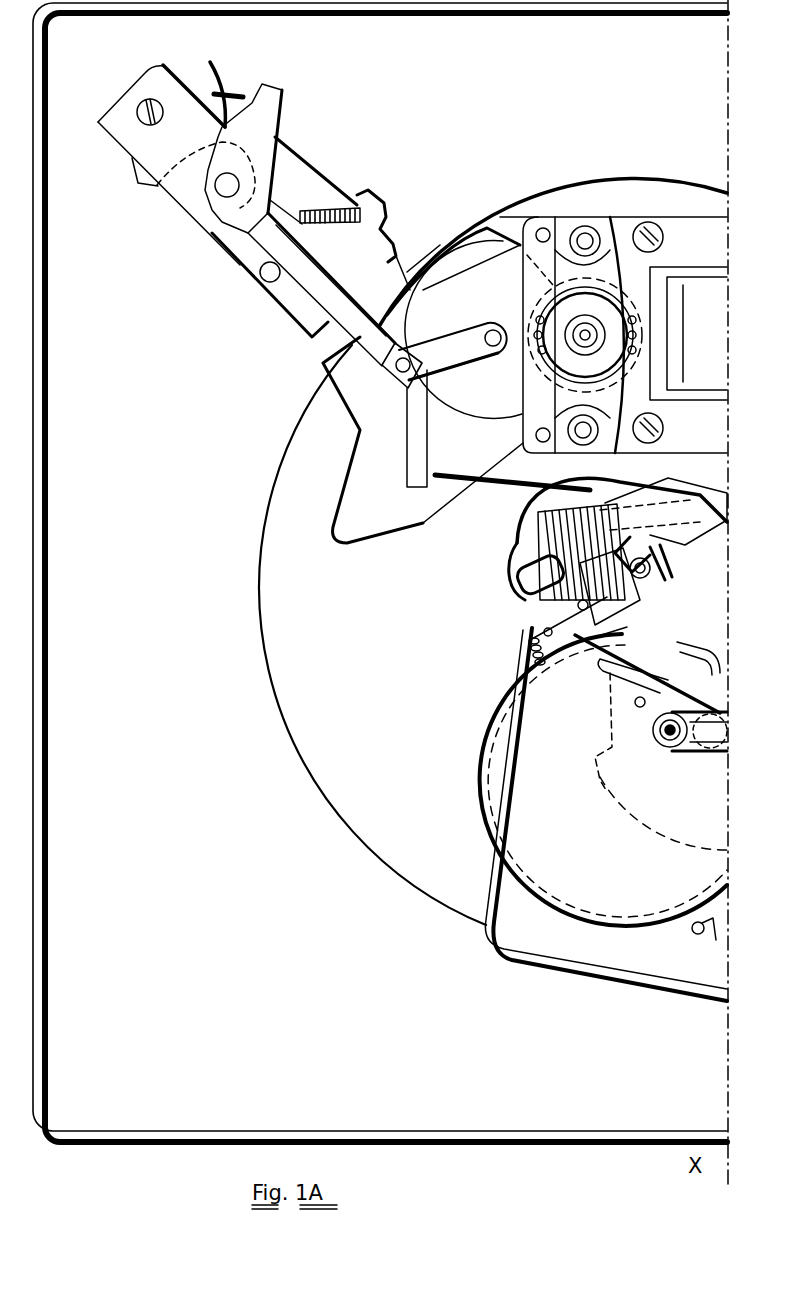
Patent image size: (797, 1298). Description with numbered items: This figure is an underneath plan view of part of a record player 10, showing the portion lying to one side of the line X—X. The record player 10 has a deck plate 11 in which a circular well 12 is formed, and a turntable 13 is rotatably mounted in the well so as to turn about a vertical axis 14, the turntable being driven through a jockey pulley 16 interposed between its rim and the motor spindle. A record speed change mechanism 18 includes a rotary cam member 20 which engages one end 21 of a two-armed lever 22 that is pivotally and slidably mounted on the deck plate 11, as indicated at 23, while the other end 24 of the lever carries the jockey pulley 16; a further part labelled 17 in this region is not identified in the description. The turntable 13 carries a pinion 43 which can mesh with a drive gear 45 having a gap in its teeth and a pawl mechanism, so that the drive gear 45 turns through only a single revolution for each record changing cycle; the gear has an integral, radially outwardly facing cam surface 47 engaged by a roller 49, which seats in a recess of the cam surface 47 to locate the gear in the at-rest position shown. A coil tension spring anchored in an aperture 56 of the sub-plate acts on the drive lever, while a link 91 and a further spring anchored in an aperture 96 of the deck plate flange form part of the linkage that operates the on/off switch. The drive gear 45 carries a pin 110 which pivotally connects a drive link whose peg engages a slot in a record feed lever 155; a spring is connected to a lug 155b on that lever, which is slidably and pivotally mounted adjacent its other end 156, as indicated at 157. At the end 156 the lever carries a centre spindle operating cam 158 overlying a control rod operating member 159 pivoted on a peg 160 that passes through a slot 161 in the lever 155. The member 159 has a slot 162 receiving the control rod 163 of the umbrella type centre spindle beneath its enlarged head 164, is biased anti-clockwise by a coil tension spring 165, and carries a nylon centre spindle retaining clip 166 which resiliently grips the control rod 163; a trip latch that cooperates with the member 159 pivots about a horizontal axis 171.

The record player 10 is at (12, 700).
The deck plate 11 is at (160, 1122).
The circular well 12 is at (272, 604).
The turntable 13 is at (363, 460).
The vertical axis 14 is at (590, 568).
The jockey pulley 16 is at (443, 287).
The guide finger 17 is at (492, 245).
The record speed change mechanism 18 is at (162, 226).
The rotary cam member 20 is at (208, 84).
The one end of two-armed lever 21 is at (237, 100).
The two-armed lever 22 is at (297, 217).
The pivotal and sliding mounting 23 is at (225, 187).
The other end of two-armed lever 24 is at (387, 360).
The pinion 43 is at (663, 443).
The drive gear 45 is at (635, 803).
The cam surface 47 is at (600, 790).
The roller 49 is at (652, 880).
The aperture 56 is at (697, 934).
The link 91 is at (530, 490).
The aperture 96 is at (585, 492).
The pin 110 is at (670, 730).
The record feed lever 155 is at (634, 701).
The lug 155b is at (677, 627).
The other end of record feed lever 156 is at (510, 560).
The lever mounting 157 is at (600, 578).
The centre spindle operating cam 158 is at (537, 540).
The control rod operating member 159 is at (668, 503).
The peg 160 is at (600, 615).
The slot 161 is at (530, 574).
The slot 162 is at (627, 543).
The control rod 163 is at (695, 470).
The enlarged head 164 is at (655, 640).
The coil tension spring 165 is at (533, 663).
The centre spindle retaining clip 166 is at (562, 652).
The horizontal axis 171 is at (688, 655).